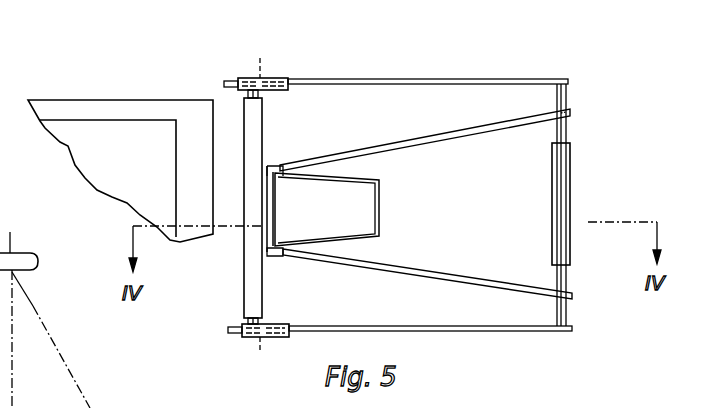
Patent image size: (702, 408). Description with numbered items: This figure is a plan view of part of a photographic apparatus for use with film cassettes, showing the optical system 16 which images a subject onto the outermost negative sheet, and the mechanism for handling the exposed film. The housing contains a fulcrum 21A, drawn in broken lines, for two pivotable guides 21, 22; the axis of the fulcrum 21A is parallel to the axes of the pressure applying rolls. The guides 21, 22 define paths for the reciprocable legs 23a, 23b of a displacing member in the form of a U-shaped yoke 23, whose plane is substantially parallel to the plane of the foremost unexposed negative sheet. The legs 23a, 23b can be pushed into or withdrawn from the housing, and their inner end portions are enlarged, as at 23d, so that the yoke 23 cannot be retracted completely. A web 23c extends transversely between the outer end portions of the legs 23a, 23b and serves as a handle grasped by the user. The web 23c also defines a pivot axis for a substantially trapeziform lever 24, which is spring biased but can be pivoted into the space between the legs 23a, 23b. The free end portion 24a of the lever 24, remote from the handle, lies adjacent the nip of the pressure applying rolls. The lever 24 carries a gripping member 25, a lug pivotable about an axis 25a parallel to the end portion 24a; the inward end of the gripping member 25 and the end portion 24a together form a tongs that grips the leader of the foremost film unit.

The optical system 16 is at (32, 253).
The pivotable guide 21 is at (284, 79).
The fulcrum 21A is at (260, 58).
The pivotable guide 22 is at (276, 338).
The U-shaped yoke 23 is at (566, 95).
The leg 23a is at (440, 79).
The leg 23b is at (488, 332).
The web 23c is at (571, 176).
The enlarged inner end portion 23d is at (226, 81).
The trapeziform lever 24 is at (410, 140).
The free end portion 24a is at (274, 214).
The gripping member 25 is at (380, 207).
The axis 25a is at (288, 168).